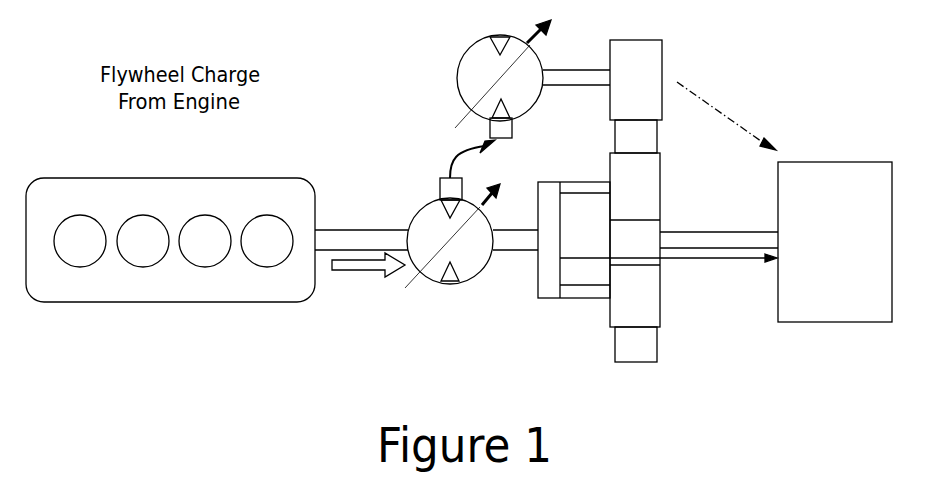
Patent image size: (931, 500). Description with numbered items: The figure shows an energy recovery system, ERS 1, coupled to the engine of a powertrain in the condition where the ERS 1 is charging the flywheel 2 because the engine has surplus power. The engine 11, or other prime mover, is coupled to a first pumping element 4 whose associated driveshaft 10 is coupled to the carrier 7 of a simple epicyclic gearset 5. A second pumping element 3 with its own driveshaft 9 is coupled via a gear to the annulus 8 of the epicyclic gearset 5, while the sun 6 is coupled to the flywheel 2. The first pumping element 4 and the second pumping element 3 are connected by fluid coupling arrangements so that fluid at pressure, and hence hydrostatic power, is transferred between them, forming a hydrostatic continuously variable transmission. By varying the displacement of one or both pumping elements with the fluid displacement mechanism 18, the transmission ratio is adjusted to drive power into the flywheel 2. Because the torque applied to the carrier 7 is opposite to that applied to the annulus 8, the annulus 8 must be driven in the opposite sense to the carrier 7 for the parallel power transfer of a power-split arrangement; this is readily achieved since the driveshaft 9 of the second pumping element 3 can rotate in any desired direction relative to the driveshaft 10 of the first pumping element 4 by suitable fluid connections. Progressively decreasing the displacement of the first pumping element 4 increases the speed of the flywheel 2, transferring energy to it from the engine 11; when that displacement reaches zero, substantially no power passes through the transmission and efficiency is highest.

The ERS 1 is at (822, 98).
The flywheel 2 is at (855, 322).
The second pumping element 3 is at (502, 33).
The first pumping element 4 is at (430, 197).
The epicyclic gearset 5 is at (677, 334).
The sun 6 is at (660, 250).
The carrier 7 is at (588, 297).
The annulus 8 is at (662, 58).
The driveshaft 9 is at (573, 70).
The driveshaft 10 is at (517, 253).
The engine 11 is at (193, 303).
The fluid displacement mechanism 18 is at (490, 130).